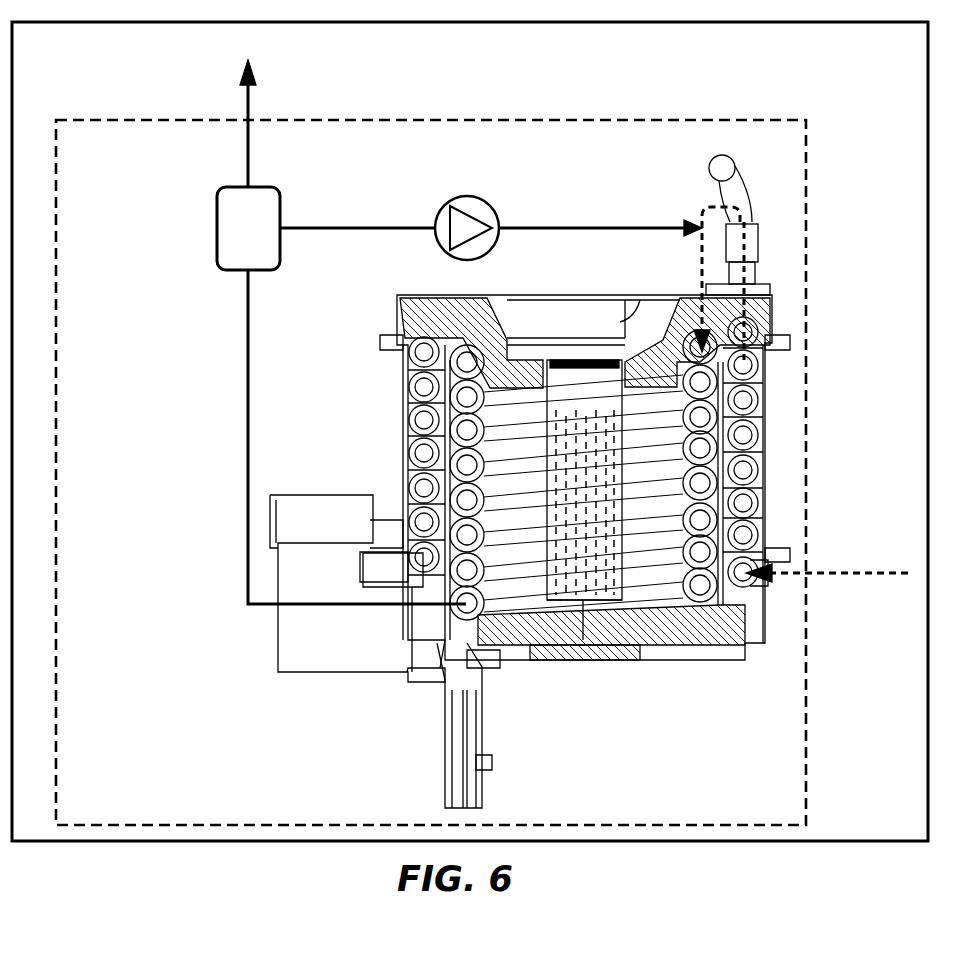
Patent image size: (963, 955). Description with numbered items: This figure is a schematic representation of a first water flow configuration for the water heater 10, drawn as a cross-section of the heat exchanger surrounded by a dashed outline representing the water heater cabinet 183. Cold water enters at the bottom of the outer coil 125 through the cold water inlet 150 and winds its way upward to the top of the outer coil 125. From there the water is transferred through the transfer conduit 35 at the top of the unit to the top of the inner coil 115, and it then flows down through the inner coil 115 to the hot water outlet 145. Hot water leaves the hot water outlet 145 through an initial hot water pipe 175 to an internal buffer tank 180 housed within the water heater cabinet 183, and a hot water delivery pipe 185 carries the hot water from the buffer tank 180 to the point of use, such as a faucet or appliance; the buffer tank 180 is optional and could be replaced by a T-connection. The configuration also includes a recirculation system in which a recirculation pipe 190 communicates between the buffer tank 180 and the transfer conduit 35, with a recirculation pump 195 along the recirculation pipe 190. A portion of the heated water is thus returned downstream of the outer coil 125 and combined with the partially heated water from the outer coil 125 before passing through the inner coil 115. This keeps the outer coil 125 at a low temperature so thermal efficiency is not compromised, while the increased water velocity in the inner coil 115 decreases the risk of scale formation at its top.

The water heater 10 is at (463, 441).
The water heater cabinet 183 is at (540, 120).
The hot water delivery pipe 185 is at (250, 104).
The internal buffer tank 180 is at (281, 258).
The initial hot water pipe 175 is at (246, 372).
The recirculation pump 195 is at (440, 254).
The recirculation pipe 190 is at (560, 226).
The transfer conduit 35 is at (720, 165).
The inner coil 115 is at (717, 425).
The outer coil 125 is at (760, 478).
The hot water outlet 145 is at (428, 610).
The cold water inlet 150 is at (822, 578).